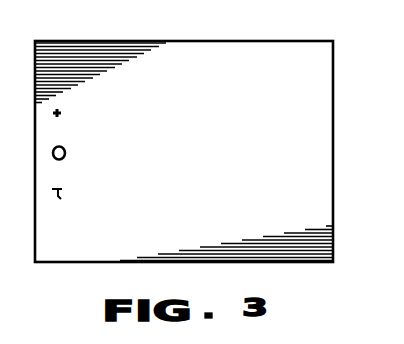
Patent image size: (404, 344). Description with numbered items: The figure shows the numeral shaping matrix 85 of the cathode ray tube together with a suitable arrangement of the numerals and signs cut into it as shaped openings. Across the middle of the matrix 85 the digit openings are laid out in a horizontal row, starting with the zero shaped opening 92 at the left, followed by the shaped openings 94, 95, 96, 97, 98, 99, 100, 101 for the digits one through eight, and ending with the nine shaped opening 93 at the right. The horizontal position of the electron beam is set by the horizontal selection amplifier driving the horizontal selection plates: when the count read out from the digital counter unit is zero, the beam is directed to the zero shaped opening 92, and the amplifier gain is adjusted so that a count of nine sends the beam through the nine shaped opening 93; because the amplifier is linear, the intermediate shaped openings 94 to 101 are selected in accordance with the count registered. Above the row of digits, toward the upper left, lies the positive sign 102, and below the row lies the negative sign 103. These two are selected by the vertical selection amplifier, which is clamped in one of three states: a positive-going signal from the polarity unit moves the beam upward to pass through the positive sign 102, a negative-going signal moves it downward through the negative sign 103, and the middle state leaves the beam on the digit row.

The matrix 85 is at (339, 201).
The zero shaped opening 92 is at (66, 147).
The shaped opening 94 is at (88, 162).
The shaped opening 95 is at (116, 147).
The shaped opening 96 is at (137, 162).
The shaped opening 97 is at (174, 143).
The shaped opening 98 is at (200, 162).
The shaped opening 99 is at (228, 143).
The shaped opening 100 is at (258, 162).
The shaped opening 101 is at (280, 140).
The nine shaped opening 93 is at (306, 162).
The positive sign 102 is at (61, 108).
The negative sign 103 is at (62, 194).